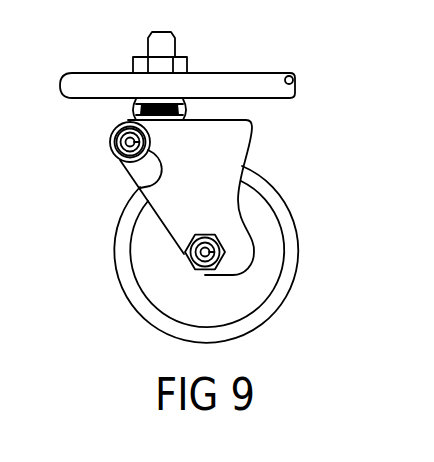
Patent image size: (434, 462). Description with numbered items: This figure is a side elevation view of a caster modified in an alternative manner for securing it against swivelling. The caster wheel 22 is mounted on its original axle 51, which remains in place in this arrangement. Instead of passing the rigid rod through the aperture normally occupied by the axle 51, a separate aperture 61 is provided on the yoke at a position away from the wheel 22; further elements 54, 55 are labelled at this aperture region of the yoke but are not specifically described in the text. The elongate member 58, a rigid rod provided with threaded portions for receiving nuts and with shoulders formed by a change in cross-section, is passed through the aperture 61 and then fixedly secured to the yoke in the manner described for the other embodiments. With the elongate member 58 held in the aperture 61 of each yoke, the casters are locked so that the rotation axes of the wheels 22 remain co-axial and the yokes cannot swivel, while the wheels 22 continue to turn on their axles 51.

The caster wheel 22 is at (268, 198).
The axle 51 is at (183, 257).
The bearing 54 is at (121, 166).
The pivot bracket 55 is at (122, 124).
The elongate member 58 is at (133, 183).
The separate aperture 61 is at (104, 141).